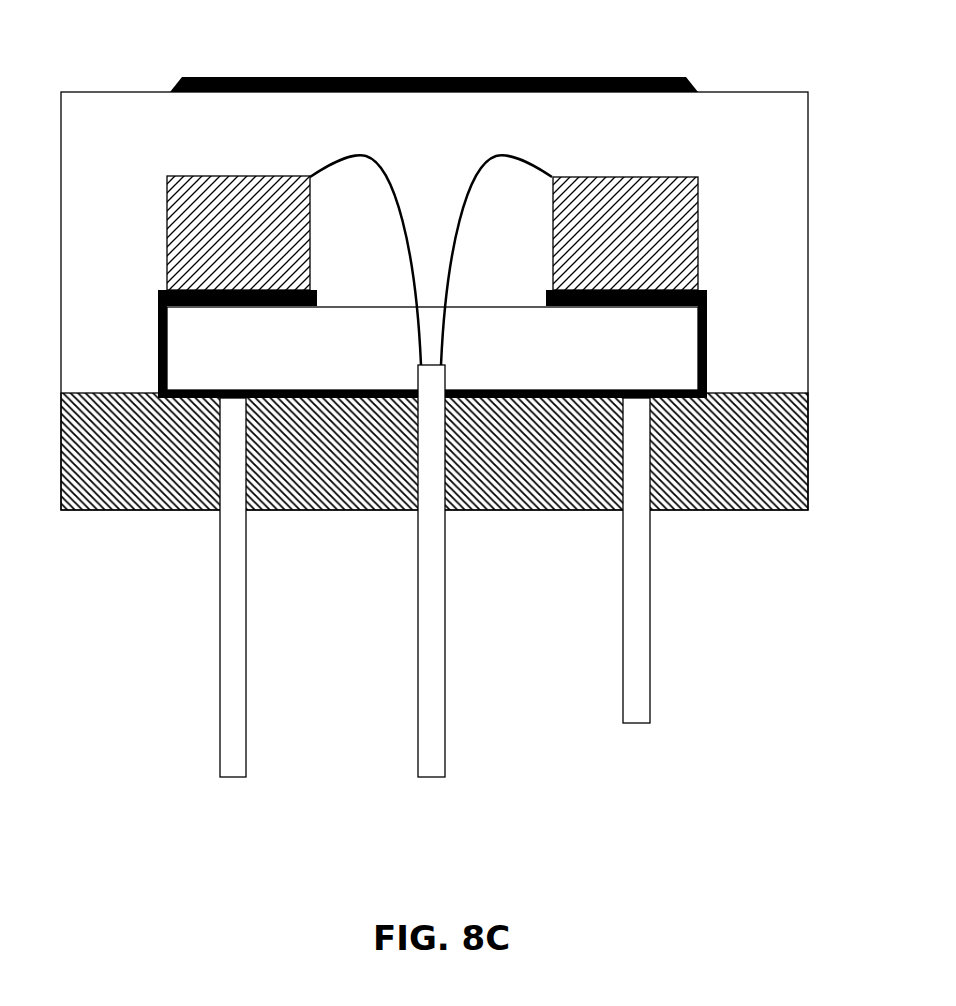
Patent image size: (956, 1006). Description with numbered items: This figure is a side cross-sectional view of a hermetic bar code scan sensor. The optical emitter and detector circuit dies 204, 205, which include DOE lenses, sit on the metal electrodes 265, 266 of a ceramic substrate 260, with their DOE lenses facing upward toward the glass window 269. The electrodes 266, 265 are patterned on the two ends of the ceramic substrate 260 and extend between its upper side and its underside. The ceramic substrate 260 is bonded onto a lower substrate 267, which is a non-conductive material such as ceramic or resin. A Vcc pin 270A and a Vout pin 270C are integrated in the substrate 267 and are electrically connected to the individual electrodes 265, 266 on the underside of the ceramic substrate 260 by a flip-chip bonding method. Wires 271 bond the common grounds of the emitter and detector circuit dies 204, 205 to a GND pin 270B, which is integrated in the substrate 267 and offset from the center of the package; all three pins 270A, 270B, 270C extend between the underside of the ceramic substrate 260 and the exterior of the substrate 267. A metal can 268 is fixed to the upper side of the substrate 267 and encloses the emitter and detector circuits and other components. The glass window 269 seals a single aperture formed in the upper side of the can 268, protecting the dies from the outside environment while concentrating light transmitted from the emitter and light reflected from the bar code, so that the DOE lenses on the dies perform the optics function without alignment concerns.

The optical emitter circuit die 204 is at (214, 176).
The optical detector circuit die 205 is at (654, 177).
The ceramic substrate 260 is at (360, 307).
The metal electrode 265 is at (745, 340).
The metal electrode 266 is at (158, 325).
The substrate 267 is at (784, 511).
The metal can 268 is at (808, 199).
The glass window 269 is at (350, 77).
The Vcc pin 270A is at (230, 778).
The GND pin 270B is at (428, 778).
The Vout pin 270C is at (632, 724).
The wires 271 is at (356, 157).